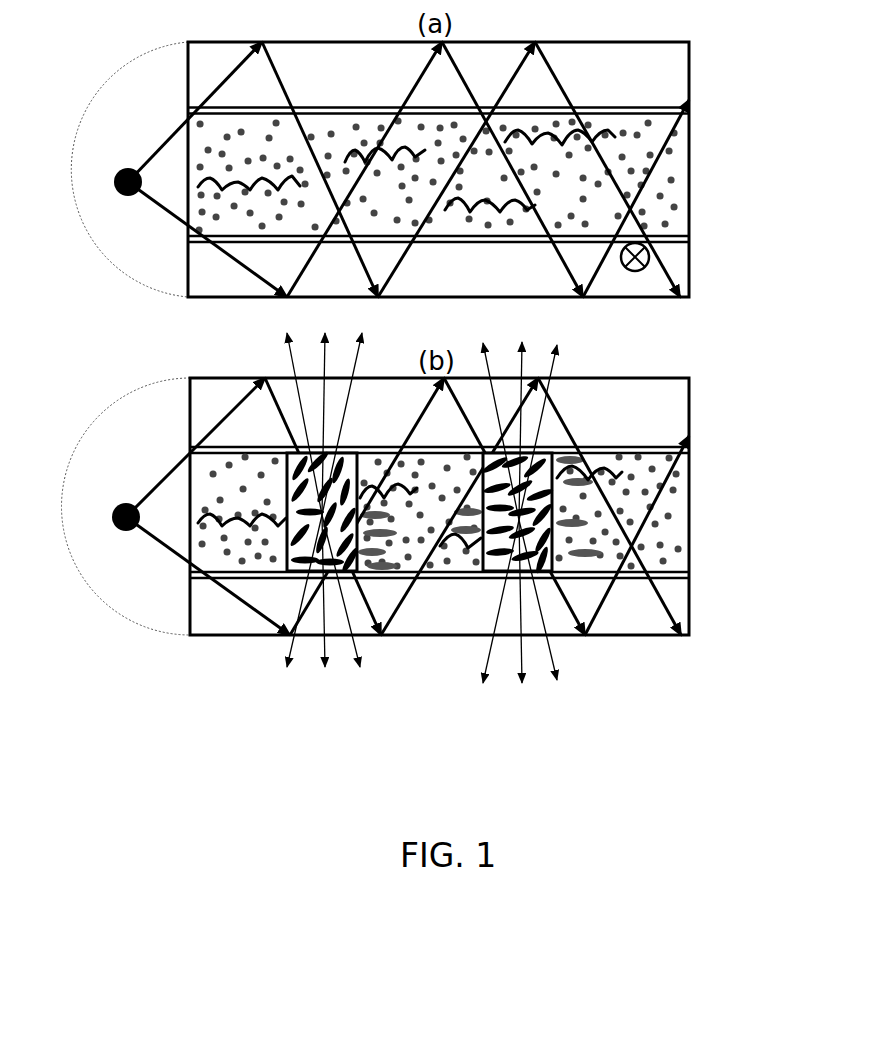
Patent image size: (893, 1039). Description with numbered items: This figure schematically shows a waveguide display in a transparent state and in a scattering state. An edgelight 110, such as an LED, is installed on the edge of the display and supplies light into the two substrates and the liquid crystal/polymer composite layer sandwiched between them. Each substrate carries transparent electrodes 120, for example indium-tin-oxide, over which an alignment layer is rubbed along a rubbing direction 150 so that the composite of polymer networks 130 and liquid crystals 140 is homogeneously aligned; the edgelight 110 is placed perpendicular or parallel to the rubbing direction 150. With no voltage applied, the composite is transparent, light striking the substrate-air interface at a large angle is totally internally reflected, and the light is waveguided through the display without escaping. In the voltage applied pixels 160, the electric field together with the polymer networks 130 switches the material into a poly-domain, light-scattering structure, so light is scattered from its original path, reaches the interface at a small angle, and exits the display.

The edgelight 110 is at (129, 156).
The transparent electrodes 120 is at (690, 113).
The polymer networks 130 is at (358, 155).
The liquid crystals 140 is at (690, 200).
The rubbing direction 150 is at (631, 272).
The voltage applied pixels 160 is at (312, 568).